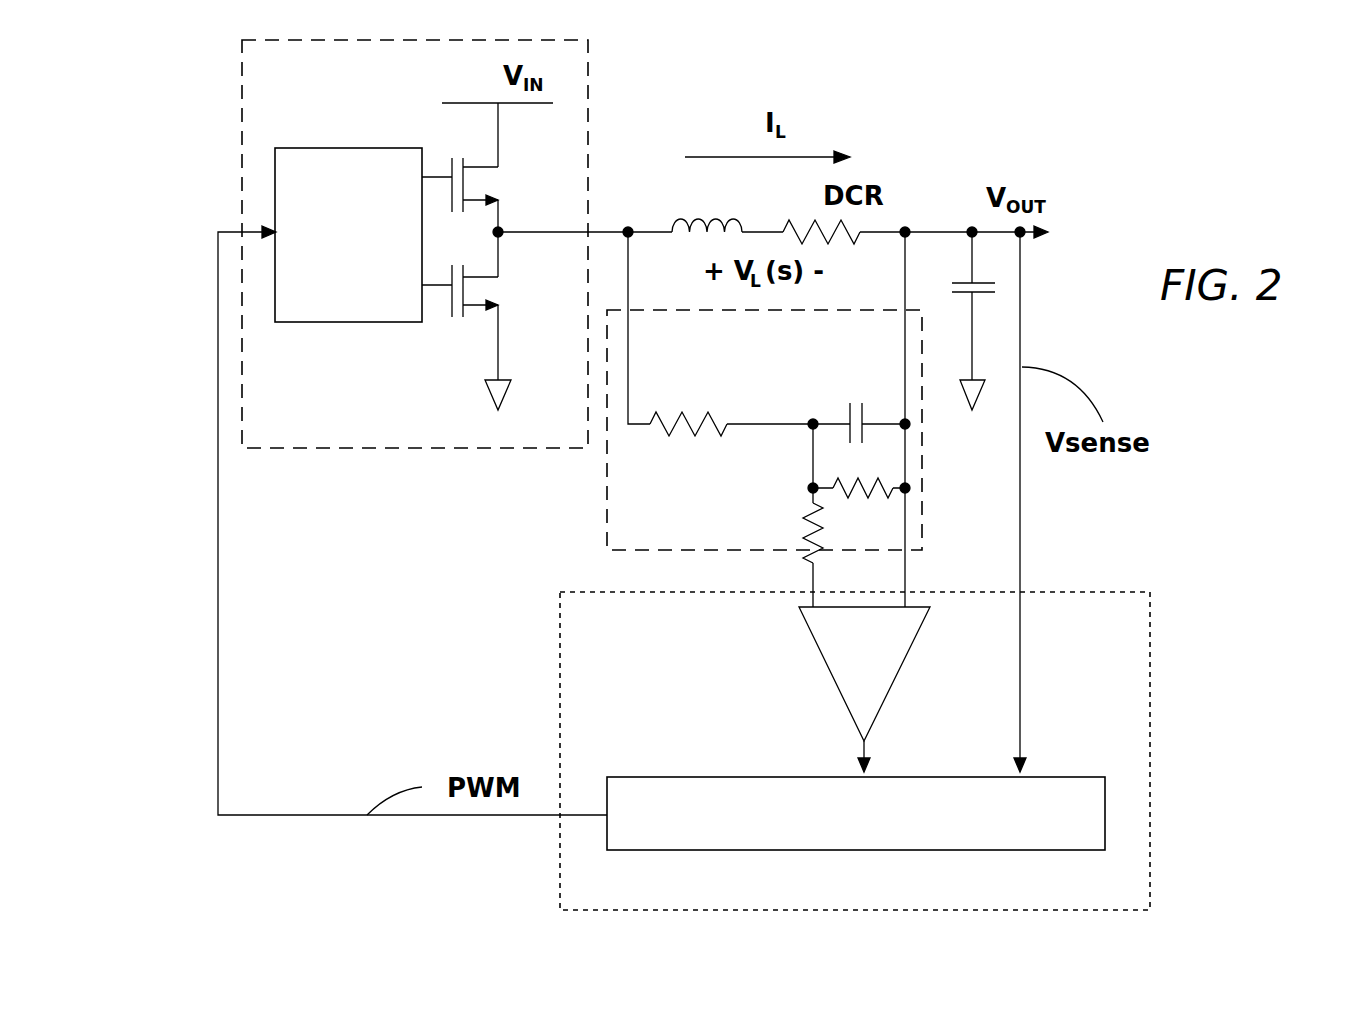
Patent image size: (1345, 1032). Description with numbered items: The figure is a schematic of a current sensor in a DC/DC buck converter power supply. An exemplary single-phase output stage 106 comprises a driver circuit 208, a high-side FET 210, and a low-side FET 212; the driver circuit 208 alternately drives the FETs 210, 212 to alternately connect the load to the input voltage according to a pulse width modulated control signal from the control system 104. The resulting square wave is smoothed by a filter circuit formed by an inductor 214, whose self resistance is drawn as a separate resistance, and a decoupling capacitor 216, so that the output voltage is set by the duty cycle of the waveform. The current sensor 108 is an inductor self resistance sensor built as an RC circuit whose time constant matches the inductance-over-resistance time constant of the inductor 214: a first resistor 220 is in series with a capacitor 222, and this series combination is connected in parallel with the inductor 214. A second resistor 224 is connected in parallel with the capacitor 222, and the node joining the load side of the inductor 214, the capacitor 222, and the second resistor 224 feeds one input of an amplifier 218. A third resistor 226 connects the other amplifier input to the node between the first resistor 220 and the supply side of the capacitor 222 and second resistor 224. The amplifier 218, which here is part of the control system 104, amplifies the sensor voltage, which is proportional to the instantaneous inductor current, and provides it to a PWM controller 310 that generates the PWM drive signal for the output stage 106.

The control system 104 is at (1150, 648).
The output stage 106 is at (377, 450).
The current sensor 108 is at (597, 524).
The driver circuit 208 is at (347, 323).
The high-side FET 210 is at (500, 180).
The low-side FET 212 is at (500, 292).
The inductor 214 is at (733, 208).
The capacitor 216 is at (967, 300).
The amplifier 218 is at (828, 683).
The first resistor 220 is at (688, 397).
The capacitor 222 is at (846, 406).
The second resistor 224 is at (877, 486).
The third resistor 226 is at (800, 550).
The PWM controller 310 is at (1045, 778).